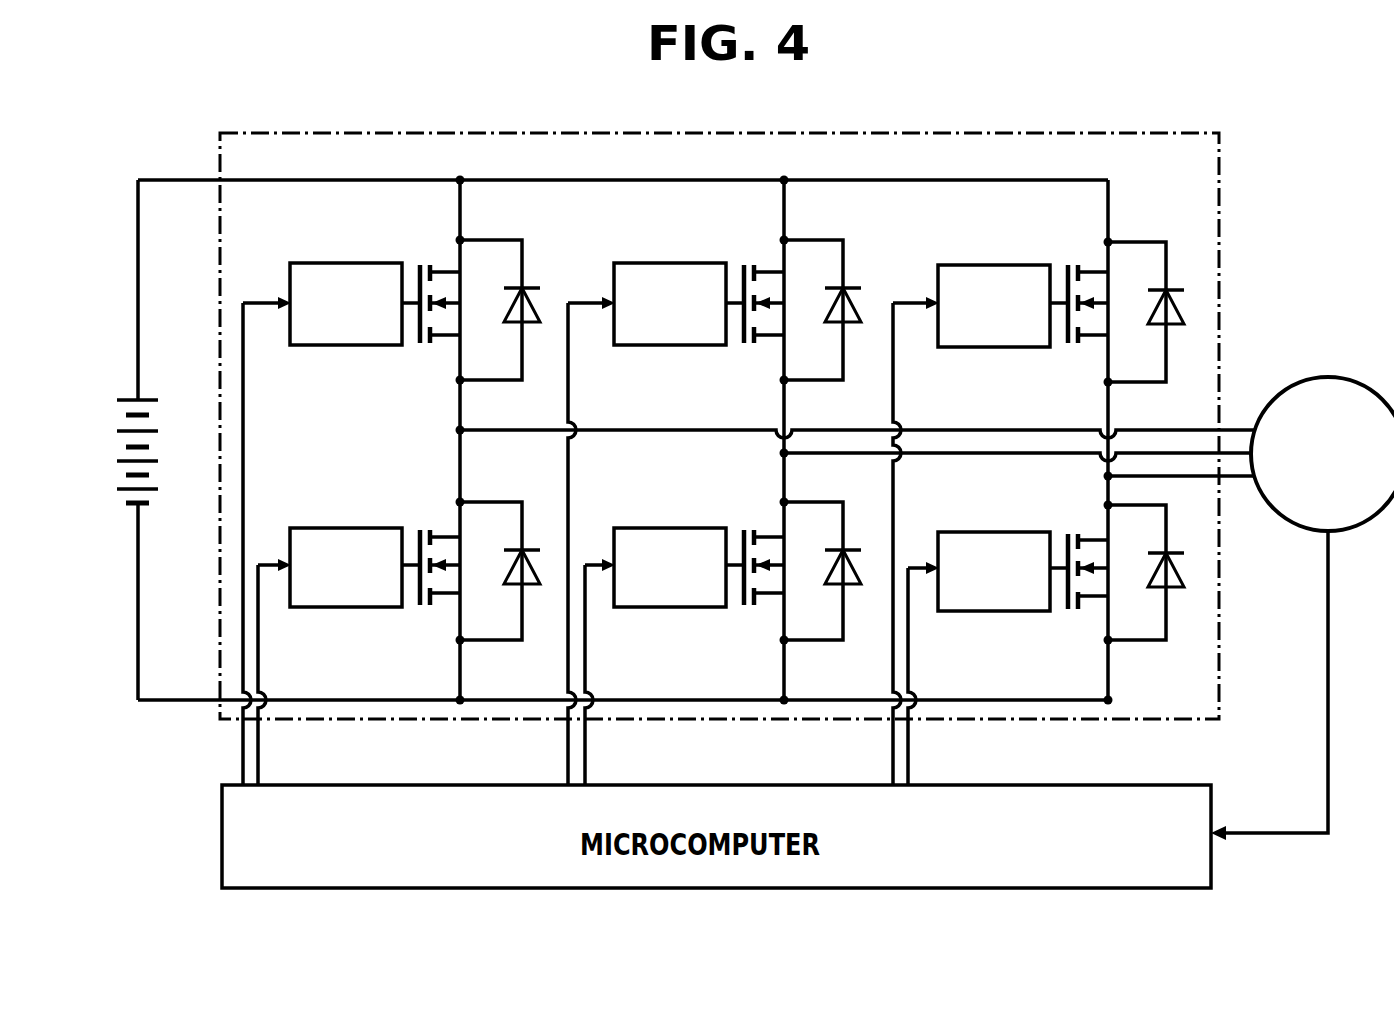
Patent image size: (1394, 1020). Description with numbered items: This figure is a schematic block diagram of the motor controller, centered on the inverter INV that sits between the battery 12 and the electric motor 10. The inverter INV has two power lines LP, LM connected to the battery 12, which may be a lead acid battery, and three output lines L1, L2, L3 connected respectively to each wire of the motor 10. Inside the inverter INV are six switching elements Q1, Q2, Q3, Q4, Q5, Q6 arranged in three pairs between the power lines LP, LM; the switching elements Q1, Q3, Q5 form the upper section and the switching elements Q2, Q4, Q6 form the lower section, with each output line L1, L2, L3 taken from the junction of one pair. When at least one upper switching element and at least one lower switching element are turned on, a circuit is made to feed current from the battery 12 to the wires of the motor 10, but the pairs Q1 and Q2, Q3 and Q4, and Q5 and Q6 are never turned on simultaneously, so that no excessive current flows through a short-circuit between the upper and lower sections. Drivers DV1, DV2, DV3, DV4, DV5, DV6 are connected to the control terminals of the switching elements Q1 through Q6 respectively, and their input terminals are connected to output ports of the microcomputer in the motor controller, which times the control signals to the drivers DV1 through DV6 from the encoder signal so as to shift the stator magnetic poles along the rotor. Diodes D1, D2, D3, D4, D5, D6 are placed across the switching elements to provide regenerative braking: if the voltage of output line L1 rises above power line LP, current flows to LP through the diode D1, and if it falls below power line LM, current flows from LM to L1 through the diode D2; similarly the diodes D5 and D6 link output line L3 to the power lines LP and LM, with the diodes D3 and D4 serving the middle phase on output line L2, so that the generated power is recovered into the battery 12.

The inverter INV is at (1058, 132).
The power line LP is at (165, 180).
The power line LM is at (166, 698).
The battery 12 is at (152, 393).
The electric motor 10 is at (1310, 377).
The driver DV1 is at (311, 262).
The driver DV2 is at (309, 527).
The driver DV3 is at (645, 262).
The driver DV4 is at (646, 527).
The driver DV5 is at (962, 264).
The driver DV6 is at (962, 532).
The switching element Q1 is at (437, 262).
The switching element Q2 is at (437, 528).
The switching element Q3 is at (771, 262).
The switching element Q4 is at (771, 528).
The switching element Q5 is at (1086, 268).
The switching element Q6 is at (1086, 535).
The diode D1 is at (508, 310).
The diode D2 is at (508, 571).
The diode D3 is at (830, 310).
The diode D4 is at (831, 571).
The diode D5 is at (1154, 312).
The diode D6 is at (1152, 573).
The output line L1 is at (640, 428).
The output line L2 is at (972, 456).
The output line L3 is at (1150, 477).